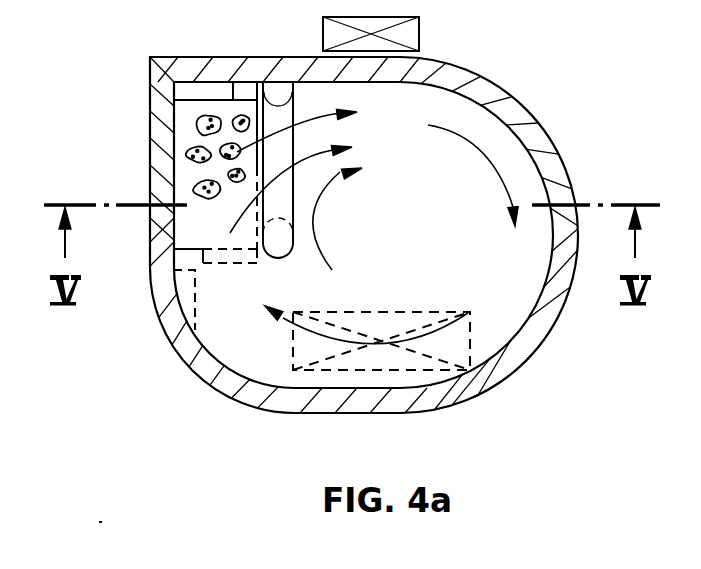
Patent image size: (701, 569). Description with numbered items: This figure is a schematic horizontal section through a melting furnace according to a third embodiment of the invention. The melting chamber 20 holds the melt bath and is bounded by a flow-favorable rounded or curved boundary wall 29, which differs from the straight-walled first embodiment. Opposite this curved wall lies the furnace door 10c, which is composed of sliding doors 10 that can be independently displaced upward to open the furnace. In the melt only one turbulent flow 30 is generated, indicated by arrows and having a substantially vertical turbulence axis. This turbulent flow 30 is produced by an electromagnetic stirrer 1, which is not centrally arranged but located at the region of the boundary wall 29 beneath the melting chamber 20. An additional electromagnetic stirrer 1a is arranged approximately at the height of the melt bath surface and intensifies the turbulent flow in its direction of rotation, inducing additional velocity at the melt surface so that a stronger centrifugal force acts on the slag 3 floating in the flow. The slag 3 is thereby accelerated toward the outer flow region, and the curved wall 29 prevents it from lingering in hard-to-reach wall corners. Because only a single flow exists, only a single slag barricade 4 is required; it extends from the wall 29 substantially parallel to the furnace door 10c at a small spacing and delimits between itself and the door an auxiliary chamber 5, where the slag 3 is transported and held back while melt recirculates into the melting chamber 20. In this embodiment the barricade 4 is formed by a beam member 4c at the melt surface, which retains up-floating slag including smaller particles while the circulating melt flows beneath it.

The electromagnetic stirrer 1 is at (500, 377).
The additional electromagnetic stirrer 1a is at (407, 35).
The slag 3 is at (197, 124).
The slag barricade 4 is at (272, 88).
The beam member 4c is at (295, 143).
The auxiliary chamber 5 is at (181, 185).
The sliding door 10 is at (150, 78).
The furnace door 10c is at (122, 147).
The melting chamber 20 is at (517, 165).
The boundary wall 29 is at (538, 347).
The turbulent flow 30 is at (493, 164).